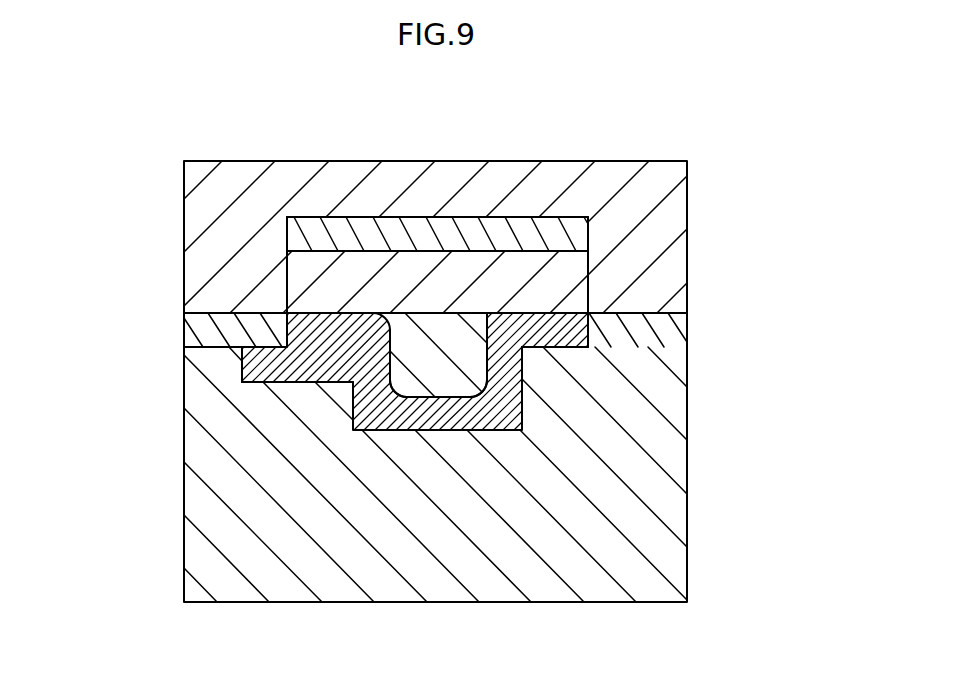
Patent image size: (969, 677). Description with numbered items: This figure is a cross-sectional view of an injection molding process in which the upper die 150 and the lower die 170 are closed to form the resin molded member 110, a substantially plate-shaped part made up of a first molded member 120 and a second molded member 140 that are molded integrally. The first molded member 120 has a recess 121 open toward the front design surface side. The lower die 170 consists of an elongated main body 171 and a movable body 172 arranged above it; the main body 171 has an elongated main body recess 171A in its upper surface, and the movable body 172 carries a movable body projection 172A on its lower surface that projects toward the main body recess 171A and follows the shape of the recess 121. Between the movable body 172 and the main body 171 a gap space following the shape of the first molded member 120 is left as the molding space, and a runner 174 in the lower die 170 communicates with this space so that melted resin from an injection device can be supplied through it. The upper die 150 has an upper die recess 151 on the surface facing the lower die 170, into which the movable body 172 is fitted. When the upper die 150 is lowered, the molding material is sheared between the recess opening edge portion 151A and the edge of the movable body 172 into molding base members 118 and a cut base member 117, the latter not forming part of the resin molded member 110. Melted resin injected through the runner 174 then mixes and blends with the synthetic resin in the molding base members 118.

The resin molded member 110 is at (795, 337).
The first molded member 120 is at (522, 377).
The second molded member 140 is at (710, 341).
The upper die 150 is at (668, 217).
The cut base member 117 is at (387, 238).
The upper die recess 151 is at (480, 230).
The recess opening edge portion 151A is at (655, 307).
The molding base member 118 is at (653, 307).
The recess 121 is at (487, 355).
The lower die 170 is at (90, 265).
The main body 171 is at (200, 365).
The main body recess 171A is at (665, 333).
The movable body 172 is at (288, 267).
The movable body projection 172A is at (390, 372).
The runner 174 is at (279, 361).